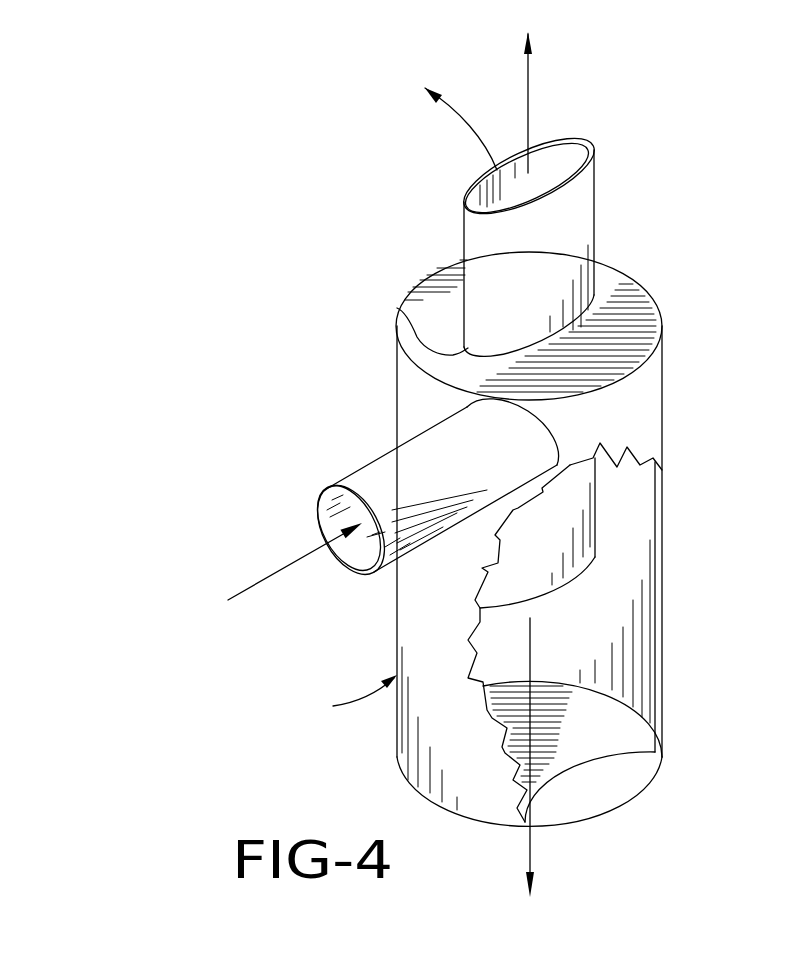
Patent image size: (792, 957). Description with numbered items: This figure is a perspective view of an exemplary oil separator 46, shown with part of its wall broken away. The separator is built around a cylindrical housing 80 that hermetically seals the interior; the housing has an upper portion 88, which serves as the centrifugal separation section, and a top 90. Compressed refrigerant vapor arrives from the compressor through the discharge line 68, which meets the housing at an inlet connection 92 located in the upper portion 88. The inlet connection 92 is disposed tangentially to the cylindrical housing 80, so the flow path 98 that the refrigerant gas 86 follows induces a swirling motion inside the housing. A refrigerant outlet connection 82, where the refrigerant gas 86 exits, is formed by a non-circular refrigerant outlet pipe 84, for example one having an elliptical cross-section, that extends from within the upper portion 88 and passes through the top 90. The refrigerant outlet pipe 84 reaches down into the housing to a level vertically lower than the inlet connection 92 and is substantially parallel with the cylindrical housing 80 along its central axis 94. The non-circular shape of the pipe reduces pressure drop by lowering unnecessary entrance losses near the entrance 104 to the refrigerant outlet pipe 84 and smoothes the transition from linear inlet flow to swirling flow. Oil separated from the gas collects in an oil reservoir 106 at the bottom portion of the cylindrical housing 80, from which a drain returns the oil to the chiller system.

The oil separator 46 is at (238, 330).
The discharge line 68 is at (368, 472).
The cylindrical housing 80 is at (634, 488).
The refrigerant outlet connection 82 is at (397, 308).
The refrigerant outlet pipe 84 is at (575, 212).
The refrigerant gas 86 is at (467, 122).
The upper portion 88 is at (395, 401).
The top 90 is at (610, 282).
The inlet connection 92 is at (565, 432).
The central axis 94 is at (530, 858).
The flow path 98 is at (278, 568).
The entrance 104 is at (595, 530).
The oil reservoir 106 is at (337, 698).